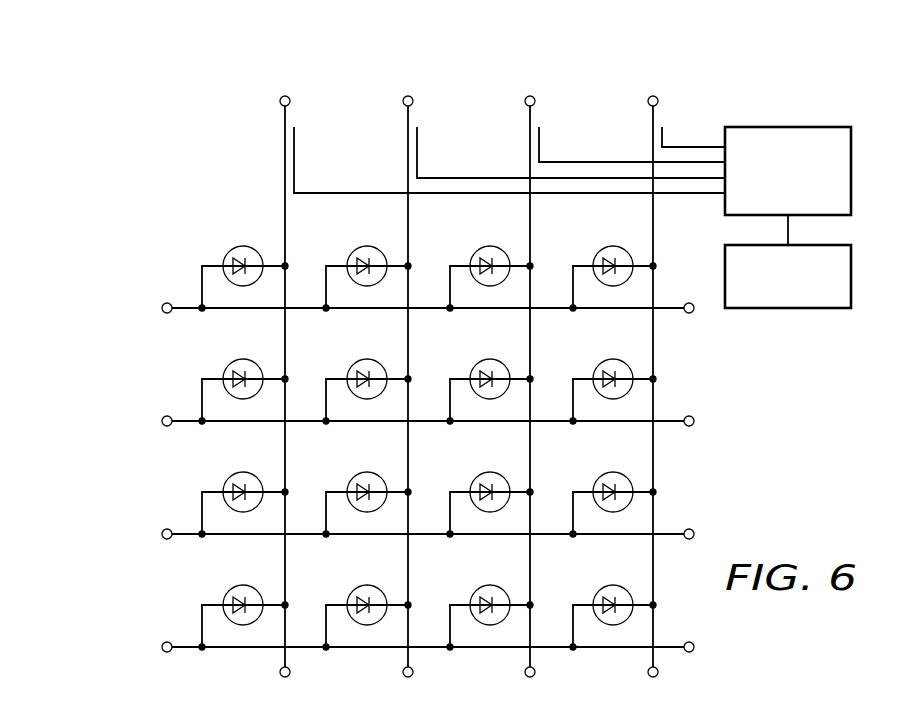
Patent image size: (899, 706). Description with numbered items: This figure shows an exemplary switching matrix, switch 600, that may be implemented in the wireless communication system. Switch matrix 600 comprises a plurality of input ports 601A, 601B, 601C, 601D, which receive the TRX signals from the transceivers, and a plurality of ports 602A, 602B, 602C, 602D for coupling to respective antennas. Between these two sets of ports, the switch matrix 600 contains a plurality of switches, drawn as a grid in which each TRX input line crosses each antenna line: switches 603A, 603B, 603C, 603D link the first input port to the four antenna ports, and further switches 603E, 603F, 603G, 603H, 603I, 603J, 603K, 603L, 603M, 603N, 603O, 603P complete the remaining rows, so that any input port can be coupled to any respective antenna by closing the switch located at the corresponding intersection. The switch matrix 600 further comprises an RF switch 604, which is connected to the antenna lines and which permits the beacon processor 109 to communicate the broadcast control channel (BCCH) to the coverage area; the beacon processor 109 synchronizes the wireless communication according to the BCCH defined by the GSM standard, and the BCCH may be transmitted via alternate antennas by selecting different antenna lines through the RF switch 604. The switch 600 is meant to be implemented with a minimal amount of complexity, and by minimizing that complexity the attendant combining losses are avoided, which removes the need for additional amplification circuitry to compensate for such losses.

The switch matrix 600 is at (155, 125).
The input port 601A is at (110, 307).
The input port 601B is at (110, 420).
The input port 601C is at (110, 533).
The input port 601D is at (110, 646).
The antenna port 602A is at (283, 68).
The antenna port 602B is at (406, 68).
The antenna port 602C is at (528, 68).
The antenna port 602D is at (651, 68).
The switch 603A is at (230, 251).
The switch 603B is at (354, 251).
The switch 603C is at (477, 251).
The switch 603D is at (600, 251).
The switch 603E is at (230, 364).
The switch 603F is at (354, 364).
The switch 603G is at (477, 364).
The switch 603H is at (600, 364).
The switch 603I is at (230, 477).
The switch 603J is at (354, 477).
The switch 603K is at (477, 477).
The switch 603L is at (600, 477).
The switch 603M is at (230, 590).
The switch 603N is at (354, 590).
The switch 603O is at (477, 590).
The switch 603P is at (600, 590).
The RF switch 604 is at (800, 127).
The beacon processor 109 is at (800, 308).